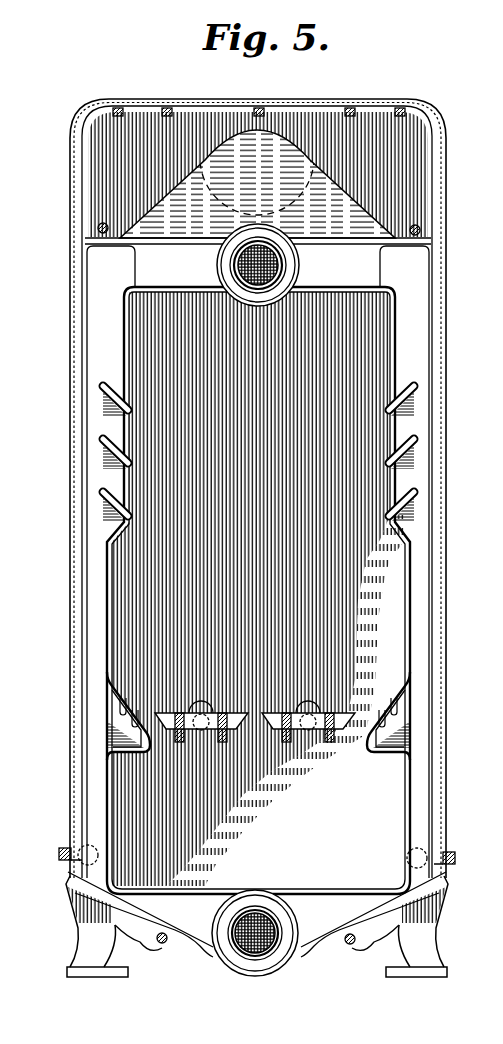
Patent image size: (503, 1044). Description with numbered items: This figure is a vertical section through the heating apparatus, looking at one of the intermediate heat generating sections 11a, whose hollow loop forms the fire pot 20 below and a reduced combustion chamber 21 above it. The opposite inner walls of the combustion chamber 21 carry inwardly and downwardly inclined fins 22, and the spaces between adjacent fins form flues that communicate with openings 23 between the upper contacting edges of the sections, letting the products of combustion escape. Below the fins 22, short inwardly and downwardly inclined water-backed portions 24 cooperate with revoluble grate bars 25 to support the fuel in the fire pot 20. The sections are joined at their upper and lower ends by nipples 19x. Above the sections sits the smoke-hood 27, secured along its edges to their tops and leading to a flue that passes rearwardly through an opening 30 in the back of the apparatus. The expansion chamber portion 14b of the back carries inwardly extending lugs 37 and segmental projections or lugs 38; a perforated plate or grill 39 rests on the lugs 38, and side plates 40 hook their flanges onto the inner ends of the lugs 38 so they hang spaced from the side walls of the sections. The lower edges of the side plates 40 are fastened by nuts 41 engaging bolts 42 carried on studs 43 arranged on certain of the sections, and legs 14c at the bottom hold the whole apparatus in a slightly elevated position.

The segmental projections or lugs 38 is at (97, 112).
The inwardly extending lugs 37 is at (168, 109).
The perforated plate or grill 39 is at (261, 108).
The opening in the back 30 is at (292, 142).
The expansion chamber portion 14b is at (107, 166).
The smoke-hood 27 is at (257, 184).
The openings 23 is at (258, 256).
The intermediate heat generating sections 11a is at (100, 292).
The nipples 19x is at (264, 268).
The combustion chamber 21 is at (165, 378).
The side plates 40 is at (71, 396).
The fins 22 is at (110, 457).
The fire pot 20 is at (145, 610).
The water-backed portions 24 is at (125, 690).
The revoluble grate bars 25 is at (316, 742).
The studs 43 is at (80, 846).
The nuts 41 is at (60, 856).
The bolts 42 is at (75, 883).
The legs 14c is at (85, 940).